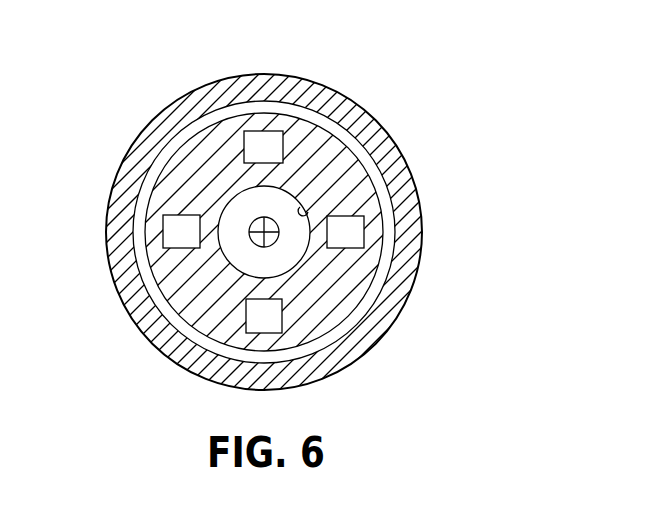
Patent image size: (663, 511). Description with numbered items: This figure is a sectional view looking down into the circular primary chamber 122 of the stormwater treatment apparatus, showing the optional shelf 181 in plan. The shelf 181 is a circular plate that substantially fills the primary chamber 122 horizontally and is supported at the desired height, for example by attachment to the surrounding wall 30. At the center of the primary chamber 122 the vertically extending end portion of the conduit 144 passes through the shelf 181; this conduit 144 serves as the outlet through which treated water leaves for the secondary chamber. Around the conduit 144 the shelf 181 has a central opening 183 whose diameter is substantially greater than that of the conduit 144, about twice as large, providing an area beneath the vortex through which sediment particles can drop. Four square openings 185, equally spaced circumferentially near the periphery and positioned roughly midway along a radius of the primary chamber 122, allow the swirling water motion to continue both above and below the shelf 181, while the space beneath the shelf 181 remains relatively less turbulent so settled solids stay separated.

The wall 30 is at (405, 190).
The primary chamber 122 is at (395, 227).
The shelf 181 is at (215, 147).
The conduit 144 is at (272, 217).
The central opening 183 is at (303, 212).
The openings 185 is at (163, 236).